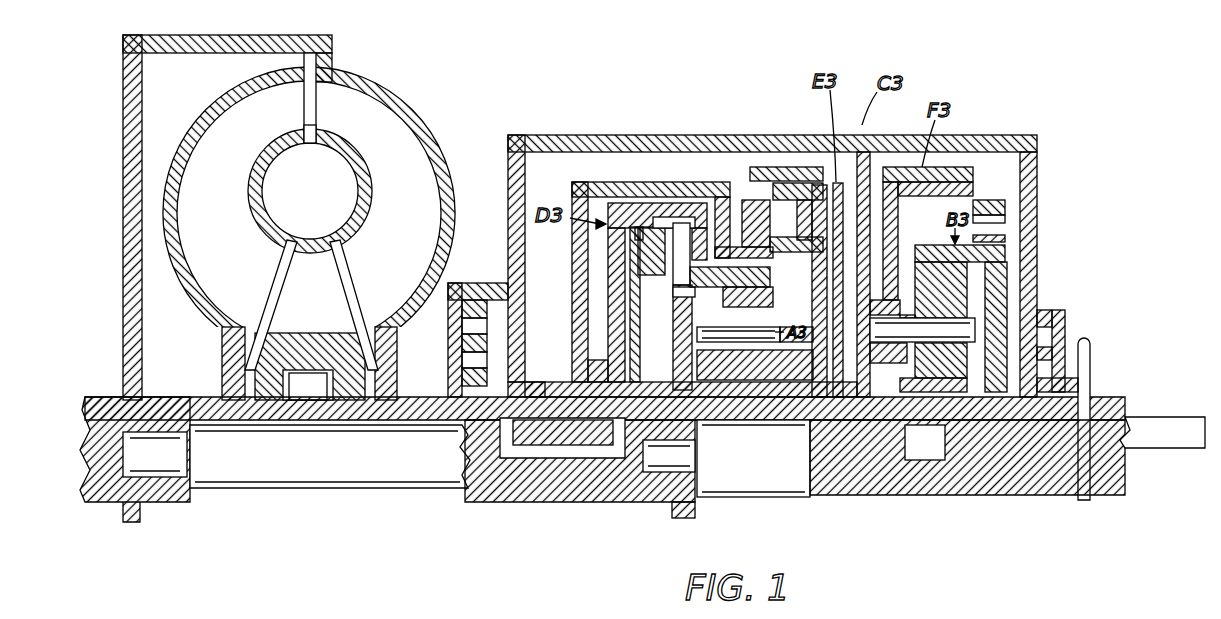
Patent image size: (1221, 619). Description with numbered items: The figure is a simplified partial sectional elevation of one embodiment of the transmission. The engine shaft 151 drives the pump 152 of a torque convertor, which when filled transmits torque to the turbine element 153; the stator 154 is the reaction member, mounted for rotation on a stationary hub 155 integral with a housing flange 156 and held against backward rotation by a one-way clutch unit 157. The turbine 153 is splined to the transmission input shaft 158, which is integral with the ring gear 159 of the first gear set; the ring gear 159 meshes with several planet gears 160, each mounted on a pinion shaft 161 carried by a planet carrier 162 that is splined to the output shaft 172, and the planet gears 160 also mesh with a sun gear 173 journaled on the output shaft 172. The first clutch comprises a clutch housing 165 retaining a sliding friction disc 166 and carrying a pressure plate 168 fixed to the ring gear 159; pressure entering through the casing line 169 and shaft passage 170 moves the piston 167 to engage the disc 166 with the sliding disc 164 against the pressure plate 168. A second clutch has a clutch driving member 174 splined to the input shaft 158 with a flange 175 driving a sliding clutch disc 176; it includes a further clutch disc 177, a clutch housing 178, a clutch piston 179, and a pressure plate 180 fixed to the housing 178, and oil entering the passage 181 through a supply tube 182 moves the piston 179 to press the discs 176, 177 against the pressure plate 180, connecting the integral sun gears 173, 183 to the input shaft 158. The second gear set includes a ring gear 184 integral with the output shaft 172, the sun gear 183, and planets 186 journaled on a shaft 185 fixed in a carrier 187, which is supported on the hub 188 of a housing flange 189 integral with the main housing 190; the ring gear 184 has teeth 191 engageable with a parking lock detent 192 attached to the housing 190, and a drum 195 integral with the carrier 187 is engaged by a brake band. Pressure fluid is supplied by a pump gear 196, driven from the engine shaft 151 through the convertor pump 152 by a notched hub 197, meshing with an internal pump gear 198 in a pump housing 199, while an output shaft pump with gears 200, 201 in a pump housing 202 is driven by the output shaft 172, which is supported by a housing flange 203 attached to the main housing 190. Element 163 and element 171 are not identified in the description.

The engine shaft 151 is at (115, 397).
The pump 152 is at (405, 86).
The turbine element 153 is at (216, 104).
The stator 154 is at (318, 333).
The stationary hub 155 is at (335, 416).
The housing flange 156 is at (516, 134).
The one-way clutch unit 157 is at (308, 385).
The transmission input shaft 158 is at (275, 459).
The ring gear 159 is at (750, 290).
The planet gears 160 is at (775, 365).
The pinion shaft 161 is at (754, 314).
The planet carrier 162 is at (753, 458).
The sleeve 163 is at (680, 360).
The sliding disc 164 is at (699, 297).
The clutch housing 165 is at (640, 203).
The sliding friction disc 166 is at (668, 262).
The piston 167 is at (666, 276).
The pressure plate 168 is at (700, 205).
The casing line 169 is at (503, 387).
The shaft passage 170 is at (575, 502).
The wall 171 is at (588, 360).
The output shaft 172 is at (736, 498).
The sun gear 173 is at (781, 391).
The clutch driving member 174 is at (572, 275).
The flange 175 is at (742, 200).
The sliding clutch disc 176 is at (760, 200).
The clutch disc 177 is at (796, 264).
The clutch housing 178 is at (803, 167).
The clutch piston 179 is at (847, 165).
The pressure plate 180 is at (755, 185).
The passage 181 is at (1012, 450).
The supply tube 182 is at (1091, 347).
The sun gear 183 is at (942, 460).
The ring gear 184 is at (940, 235).
The shaft 185 is at (922, 330).
The planets 186 is at (1008, 258).
The carrier 187 is at (895, 300).
The hub 188 is at (912, 470).
The housing flange 189 is at (880, 170).
The main housing 190 is at (1006, 134).
The teeth 191 is at (1006, 238).
The parking lock detent 192 is at (1006, 205).
The drum 195 is at (975, 190).
The pump gear 196 is at (462, 345).
The hub 197 is at (462, 372).
The internal pump gear 198 is at (462, 312).
The pump housing 199 is at (496, 283).
The pump gear 200 is at (1045, 385).
The pump gear 201 is at (1066, 326).
The pump housing 202 is at (1060, 312).
The housing flange 203 is at (1038, 152).